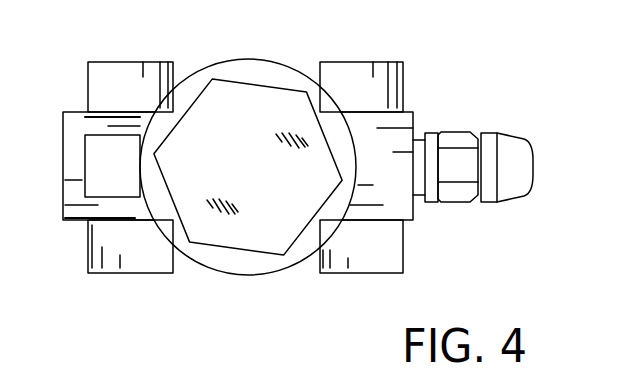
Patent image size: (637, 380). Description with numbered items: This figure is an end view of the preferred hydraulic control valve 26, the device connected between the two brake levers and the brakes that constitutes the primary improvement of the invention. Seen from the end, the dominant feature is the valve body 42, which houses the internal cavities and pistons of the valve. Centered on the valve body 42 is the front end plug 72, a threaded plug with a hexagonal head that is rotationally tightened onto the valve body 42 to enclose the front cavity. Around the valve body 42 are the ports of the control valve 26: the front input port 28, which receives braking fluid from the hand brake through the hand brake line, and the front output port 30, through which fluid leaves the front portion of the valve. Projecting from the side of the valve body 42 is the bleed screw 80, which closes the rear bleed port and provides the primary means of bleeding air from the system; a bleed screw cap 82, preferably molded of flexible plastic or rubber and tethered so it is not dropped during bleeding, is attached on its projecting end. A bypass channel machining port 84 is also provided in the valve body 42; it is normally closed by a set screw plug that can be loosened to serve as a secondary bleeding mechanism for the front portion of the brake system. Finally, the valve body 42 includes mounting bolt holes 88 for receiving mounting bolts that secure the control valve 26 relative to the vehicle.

The control valve 26 is at (458, 52).
The front input port 28 is at (415, 133).
The front output port 30 is at (63, 164).
The valve body 42 is at (232, 262).
The front end plug 72 is at (245, 97).
The bleed screw 80 is at (455, 197).
The bleed screw cap 82 is at (503, 188).
The bypass channel machining port 84 is at (84, 188).
The mounting bolt holes 88 is at (130, 262).